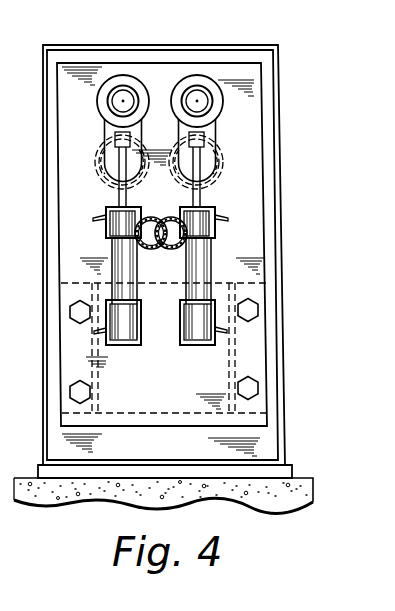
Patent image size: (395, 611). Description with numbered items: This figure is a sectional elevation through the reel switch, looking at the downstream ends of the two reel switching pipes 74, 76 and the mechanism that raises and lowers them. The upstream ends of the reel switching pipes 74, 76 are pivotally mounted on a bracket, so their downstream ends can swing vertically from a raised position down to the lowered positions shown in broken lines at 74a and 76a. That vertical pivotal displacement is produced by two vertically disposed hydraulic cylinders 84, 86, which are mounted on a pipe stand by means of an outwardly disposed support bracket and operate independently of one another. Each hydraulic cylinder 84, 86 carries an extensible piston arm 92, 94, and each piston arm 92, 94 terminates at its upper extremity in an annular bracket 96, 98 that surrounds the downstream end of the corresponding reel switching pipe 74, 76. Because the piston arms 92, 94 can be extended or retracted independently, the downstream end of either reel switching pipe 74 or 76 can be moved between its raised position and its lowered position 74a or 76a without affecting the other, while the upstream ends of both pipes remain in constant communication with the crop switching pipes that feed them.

The reel switching pipe 74 is at (213, 113).
The reel switching pipe 76 is at (109, 104).
The annular bracket 96 is at (220, 126).
The annular bracket 98 is at (100, 117).
The lowered position of reel switching pipe 74 74a is at (217, 171).
The lowered position of reel switching pipe 76 76a is at (104, 175).
The piston arm 92 is at (201, 198).
The piston arm 94 is at (122, 199).
The hydraulic cylinder 86 is at (133, 264).
The hydraulic cylinder 84 is at (188, 297).